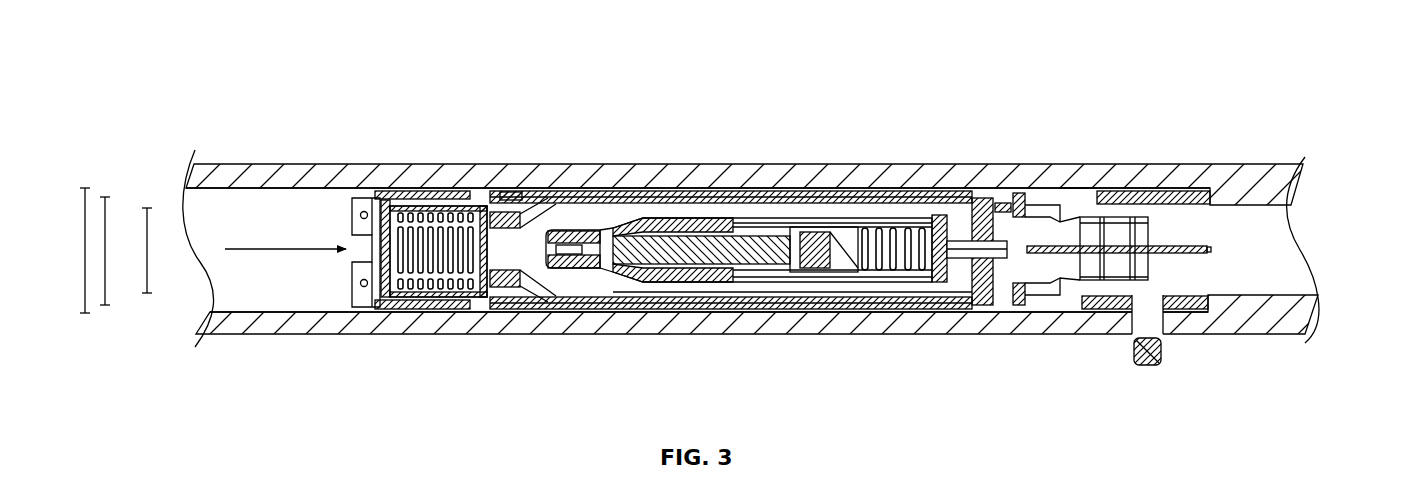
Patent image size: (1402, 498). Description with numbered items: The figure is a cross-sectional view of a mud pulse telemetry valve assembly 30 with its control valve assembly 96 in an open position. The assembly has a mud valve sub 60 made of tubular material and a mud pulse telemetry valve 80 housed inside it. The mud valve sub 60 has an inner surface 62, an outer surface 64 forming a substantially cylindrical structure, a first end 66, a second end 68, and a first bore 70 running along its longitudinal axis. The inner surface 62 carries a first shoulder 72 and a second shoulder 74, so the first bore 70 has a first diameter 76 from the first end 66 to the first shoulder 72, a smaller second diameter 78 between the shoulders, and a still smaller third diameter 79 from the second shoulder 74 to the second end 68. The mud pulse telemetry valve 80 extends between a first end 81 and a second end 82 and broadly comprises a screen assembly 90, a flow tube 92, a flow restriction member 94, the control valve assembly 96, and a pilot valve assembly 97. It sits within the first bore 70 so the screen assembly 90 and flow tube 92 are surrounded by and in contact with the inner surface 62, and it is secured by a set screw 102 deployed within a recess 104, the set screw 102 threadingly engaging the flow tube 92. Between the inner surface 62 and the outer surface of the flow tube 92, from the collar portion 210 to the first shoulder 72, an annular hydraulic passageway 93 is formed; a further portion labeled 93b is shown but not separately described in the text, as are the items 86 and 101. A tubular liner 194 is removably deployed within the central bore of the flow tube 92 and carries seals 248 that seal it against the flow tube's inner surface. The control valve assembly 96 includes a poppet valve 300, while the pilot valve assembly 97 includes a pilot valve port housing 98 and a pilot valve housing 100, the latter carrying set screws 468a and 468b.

The mud pulse telemetry valve assembly 30 is at (248, 80).
The mud valve sub 60 is at (200, 163).
The inner surface 62 is at (263, 187).
The outer surface 64 is at (260, 172).
The first end 66 is at (212, 306).
The second end 68 is at (1318, 276).
The first bore 70 is at (245, 311).
The first shoulder 72 is at (1067, 188).
The second shoulder 74 is at (1212, 200).
The first diameter 76 is at (80, 212).
The second diameter 78 is at (108, 213).
The third diameter 79 is at (149, 280).
The mud pulse telemetry valve 80 is at (820, 192).
The first end 81 is at (351, 212).
The second end 82 is at (1215, 296).
The flow direction 86 is at (322, 238).
The screen assembly 90 is at (347, 282).
The flow tube 92 is at (697, 193).
The annular hydraulic passageway 93 is at (906, 200).
The lower sleeve 93b is at (880, 305).
The flow restriction member 94 is at (552, 202).
The control valve assembly 96 is at (703, 290).
The pilot valve assembly 97 is at (1090, 212).
The pilot valve port housing 98 is at (978, 300).
The pilot valve housing 100 is at (1077, 287).
The flow direction 101 is at (338, 294).
The set screw 102 is at (1162, 358).
The recess 104 is at (1142, 362).
The tubular liner 194 is at (750, 197).
The collar portion 210 is at (385, 200).
The seals 248 is at (524, 220).
The poppet valve 300 is at (560, 268).
The set screw 468a is at (1015, 192).
The set screw 468b is at (1017, 306).